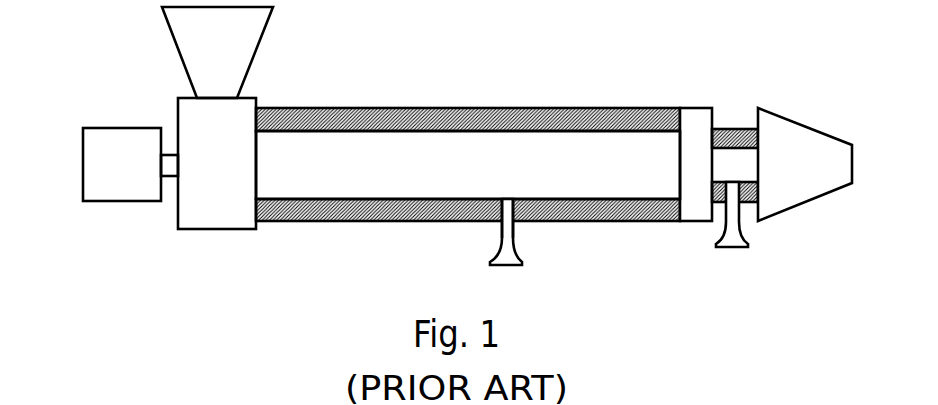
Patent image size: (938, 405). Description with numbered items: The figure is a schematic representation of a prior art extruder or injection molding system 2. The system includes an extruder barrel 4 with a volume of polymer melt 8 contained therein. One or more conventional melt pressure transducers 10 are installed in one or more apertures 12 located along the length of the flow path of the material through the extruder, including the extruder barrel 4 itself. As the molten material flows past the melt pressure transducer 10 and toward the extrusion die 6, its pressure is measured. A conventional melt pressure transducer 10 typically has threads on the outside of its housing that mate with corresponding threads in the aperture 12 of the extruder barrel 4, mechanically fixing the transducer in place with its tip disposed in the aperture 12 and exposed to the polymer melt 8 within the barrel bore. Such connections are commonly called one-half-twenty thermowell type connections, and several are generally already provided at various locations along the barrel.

The extruder or injection molding system 2 is at (112, 55).
The extruder barrel 4 is at (396, 115).
The extrusion die 6 is at (791, 140).
The polymer melt 8 is at (502, 143).
The melt pressure transducer 10 is at (507, 257).
The aperture 12 is at (508, 205).